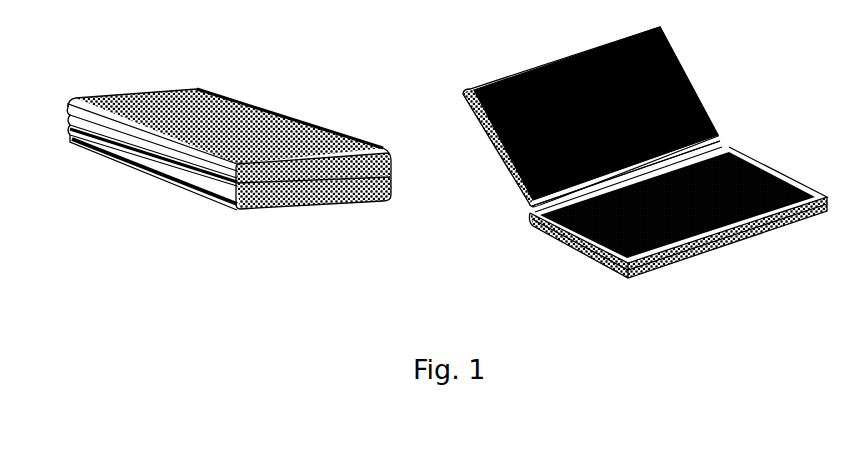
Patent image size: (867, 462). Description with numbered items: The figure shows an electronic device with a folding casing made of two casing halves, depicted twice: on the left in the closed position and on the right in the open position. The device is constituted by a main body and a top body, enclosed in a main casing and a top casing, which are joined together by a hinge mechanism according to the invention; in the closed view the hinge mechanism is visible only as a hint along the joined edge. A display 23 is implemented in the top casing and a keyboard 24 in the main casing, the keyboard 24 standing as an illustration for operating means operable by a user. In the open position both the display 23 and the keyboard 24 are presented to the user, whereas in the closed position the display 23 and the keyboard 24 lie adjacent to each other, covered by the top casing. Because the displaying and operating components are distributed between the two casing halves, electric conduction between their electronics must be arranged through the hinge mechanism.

The display 23 is at (545, 95).
The keyboard 24 is at (740, 208).